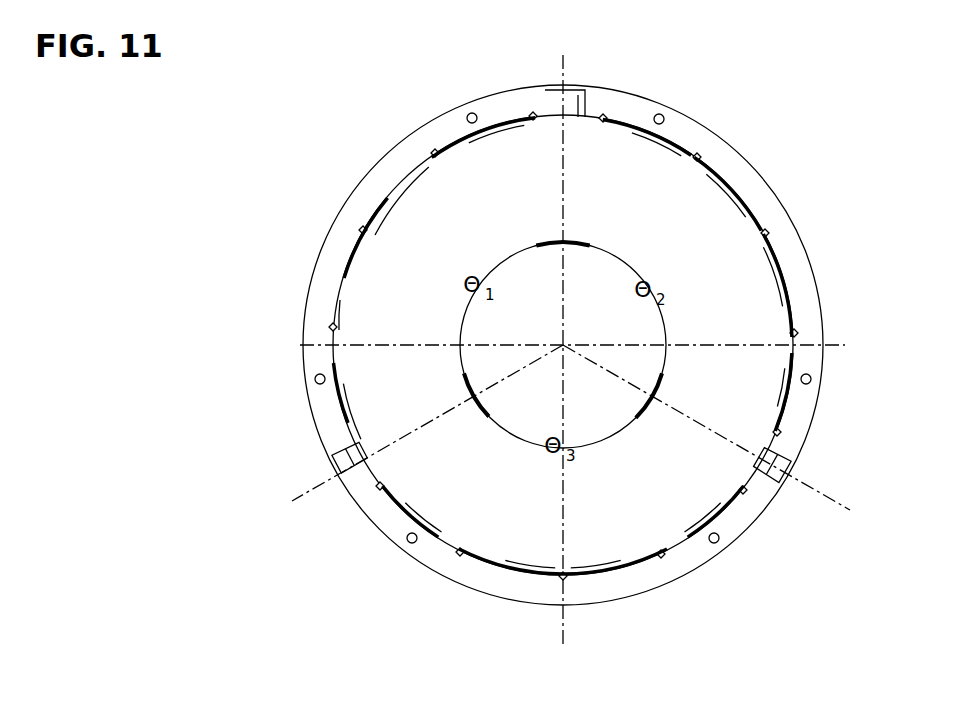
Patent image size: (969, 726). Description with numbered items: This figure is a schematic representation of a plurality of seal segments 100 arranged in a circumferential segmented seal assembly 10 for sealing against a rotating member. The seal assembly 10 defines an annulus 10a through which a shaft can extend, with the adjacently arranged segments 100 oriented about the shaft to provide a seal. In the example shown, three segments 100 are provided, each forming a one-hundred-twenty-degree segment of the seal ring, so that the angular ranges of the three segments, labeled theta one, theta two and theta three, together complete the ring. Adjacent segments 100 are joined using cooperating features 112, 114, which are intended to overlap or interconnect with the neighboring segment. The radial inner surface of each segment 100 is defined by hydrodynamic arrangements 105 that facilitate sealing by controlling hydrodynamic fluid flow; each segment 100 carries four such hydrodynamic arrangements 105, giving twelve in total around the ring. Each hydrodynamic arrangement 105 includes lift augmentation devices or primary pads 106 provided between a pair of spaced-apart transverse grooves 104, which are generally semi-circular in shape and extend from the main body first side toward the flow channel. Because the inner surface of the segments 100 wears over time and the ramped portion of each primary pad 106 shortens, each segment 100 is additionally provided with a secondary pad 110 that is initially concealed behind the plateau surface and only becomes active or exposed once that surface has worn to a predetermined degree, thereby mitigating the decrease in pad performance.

The seal assembly 10 is at (735, 68).
The annulus 10a is at (725, 315).
The segment 100 is at (378, 180).
The transverse grooves 104 is at (660, 553).
The hydrodynamic arrangements 105 is at (493, 142).
The primary pads 106 is at (700, 523).
The secondary pad 110 is at (710, 520).
The cooperating feature 112 is at (353, 460).
The cooperating feature 114 is at (352, 473).